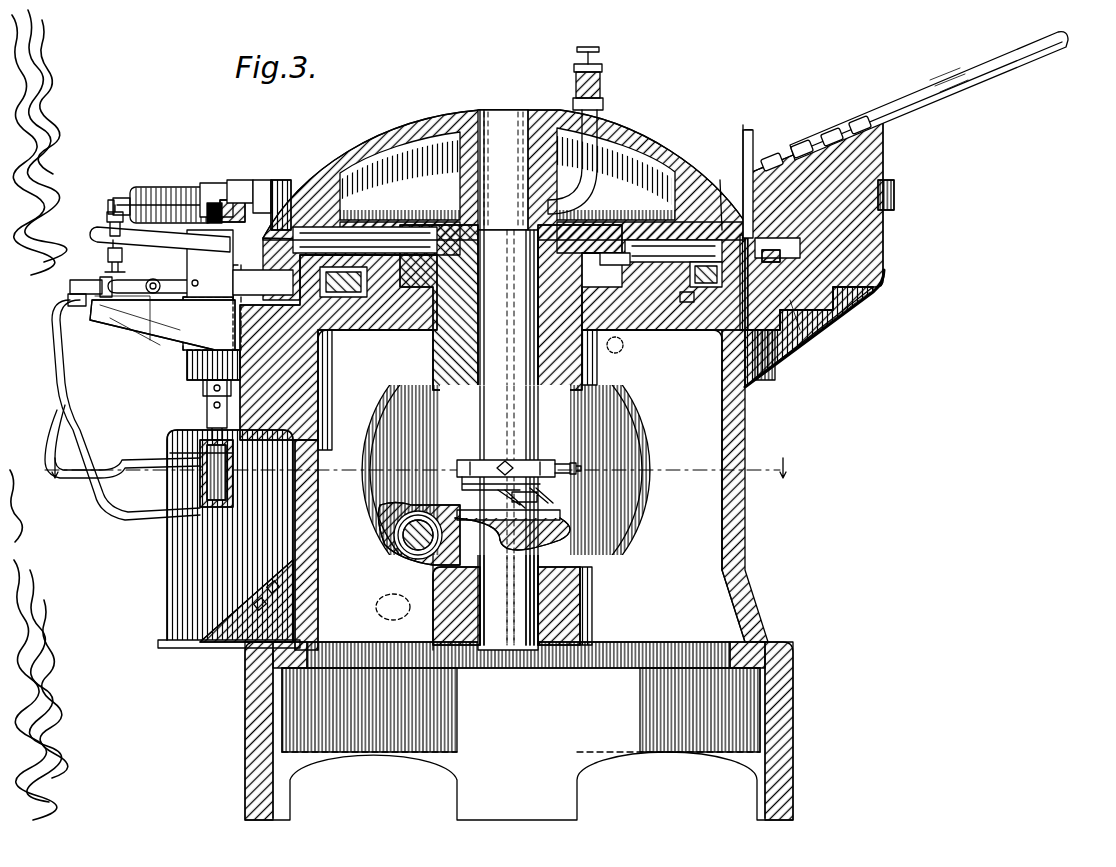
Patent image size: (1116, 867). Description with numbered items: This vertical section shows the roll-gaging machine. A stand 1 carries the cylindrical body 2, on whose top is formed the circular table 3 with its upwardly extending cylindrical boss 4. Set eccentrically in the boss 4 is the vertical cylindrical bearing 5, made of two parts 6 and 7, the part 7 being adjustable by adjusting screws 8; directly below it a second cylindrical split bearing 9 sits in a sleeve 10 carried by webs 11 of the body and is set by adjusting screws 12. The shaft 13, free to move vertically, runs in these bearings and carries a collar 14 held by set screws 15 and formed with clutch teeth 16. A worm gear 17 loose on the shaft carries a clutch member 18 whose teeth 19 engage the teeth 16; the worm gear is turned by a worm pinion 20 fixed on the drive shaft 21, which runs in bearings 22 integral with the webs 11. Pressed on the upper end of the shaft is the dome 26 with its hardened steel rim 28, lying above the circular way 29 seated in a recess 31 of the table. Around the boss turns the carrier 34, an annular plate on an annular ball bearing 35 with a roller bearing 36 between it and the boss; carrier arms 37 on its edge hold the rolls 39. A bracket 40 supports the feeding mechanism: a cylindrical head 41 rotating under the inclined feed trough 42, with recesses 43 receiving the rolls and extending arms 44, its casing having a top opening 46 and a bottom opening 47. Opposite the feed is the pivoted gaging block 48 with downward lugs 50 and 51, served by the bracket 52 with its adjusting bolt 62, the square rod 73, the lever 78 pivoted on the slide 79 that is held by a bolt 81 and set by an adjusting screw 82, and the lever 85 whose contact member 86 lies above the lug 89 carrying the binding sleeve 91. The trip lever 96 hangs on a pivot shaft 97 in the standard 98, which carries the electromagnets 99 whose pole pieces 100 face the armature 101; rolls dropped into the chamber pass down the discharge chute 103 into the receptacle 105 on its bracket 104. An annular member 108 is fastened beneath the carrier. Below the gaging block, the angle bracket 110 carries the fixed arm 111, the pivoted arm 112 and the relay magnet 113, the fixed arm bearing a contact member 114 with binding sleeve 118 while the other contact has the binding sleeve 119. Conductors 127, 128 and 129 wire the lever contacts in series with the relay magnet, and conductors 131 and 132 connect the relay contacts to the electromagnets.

The stand 1 is at (252, 722).
The cylindrical body 2 is at (735, 528).
The circular table 3 is at (838, 306).
The cylindrical boss 4 is at (585, 244).
The vertical cylindrical bearing 5 is at (623, 347).
The bearing part 6 is at (458, 343).
The bearing part 7 is at (580, 388).
The adjusting screws 8 is at (605, 345).
The second cylindrical split bearing 9 is at (548, 650).
The sleeve 10 is at (570, 612).
The webs 11 is at (520, 470).
The adjusting screws 12 is at (432, 598).
The shaft 13 is at (500, 438).
The collar 14 is at (462, 470).
The set screws 15 is at (640, 472).
The clutch teeth 16 is at (560, 495).
The worm gear 17 is at (572, 540).
The clutch member 18 is at (575, 518).
The teeth 19 is at (566, 463).
The worm pinion 20 is at (398, 538).
The drive shaft 21 is at (415, 548).
The bearings 22 is at (410, 507).
The dome 26 is at (392, 140).
The hardened steel rim 28 is at (717, 197).
The circular way 29 is at (780, 258).
The recess 31 is at (810, 305).
The carrier 34 is at (350, 255).
The annular ball bearing 35 is at (705, 288).
The roller bearing 36 is at (630, 262).
The carrier arms 37 is at (380, 268).
The roll 39 is at (300, 250).
The bracket 40 is at (872, 150).
The cylindrical head 41 is at (750, 175).
The feed trough 42 is at (930, 80).
The recesses 43 is at (778, 149).
The extending arm 44 is at (756, 133).
The opening 46 is at (802, 140).
The opening 47 is at (778, 245).
The gaging block 48 is at (322, 338).
The lug 50 is at (322, 352).
The lug 51 is at (322, 395).
The bracket 52 is at (150, 318).
The adjusting bolt 62 is at (70, 304).
The square rod 73 is at (322, 370).
The lever 78 is at (205, 262).
The slide 79 is at (153, 279).
The bolt 81 is at (195, 318).
The adjusting screw 82 is at (70, 287).
The lever 85 is at (172, 190).
The contact member 86 is at (107, 219).
The lug 89 is at (108, 256).
The binding sleeve 91 is at (130, 305).
The trip lever 96 is at (280, 182).
The pivot shaft 97 is at (262, 182).
The standard 98 is at (222, 213).
The electromagnets 99 is at (125, 200).
The pole pieces 100 is at (222, 200).
The armature 101 is at (242, 182).
The discharge chute 103 is at (203, 388).
The bracket 104 is at (250, 625).
The receptacle 105 is at (200, 603).
The annular member 108 is at (690, 305).
The angle bracket 110 is at (322, 413).
The fixed arm 111 is at (212, 430).
The pivoted arm 112 is at (207, 404).
The relay magnet 113 is at (205, 487).
The contact member 114 is at (170, 453).
The binding sleeve 118 is at (365, 470).
The binding sleeve 119 is at (200, 372).
The conductor 127 is at (117, 195).
The conductor 128 is at (47, 375).
The conductor 129 is at (62, 407).
The conductor 131 is at (167, 251).
The conductor 132 is at (128, 381).